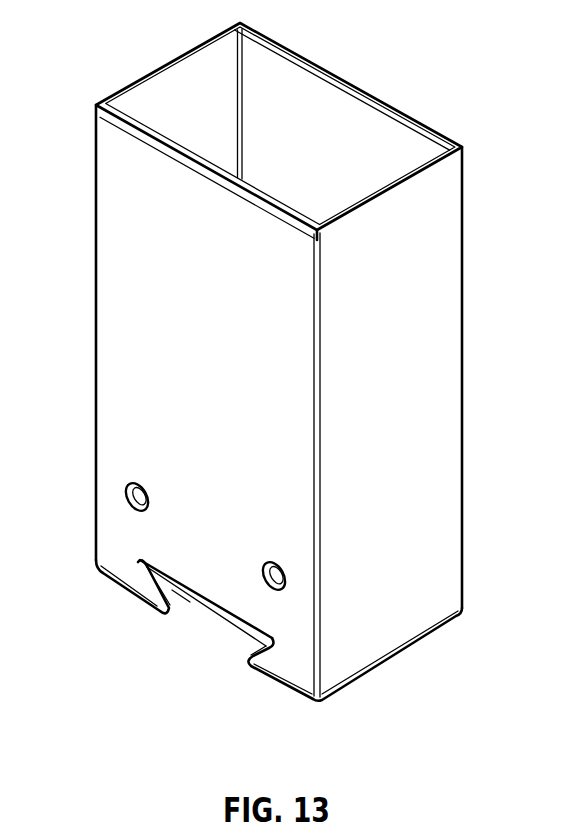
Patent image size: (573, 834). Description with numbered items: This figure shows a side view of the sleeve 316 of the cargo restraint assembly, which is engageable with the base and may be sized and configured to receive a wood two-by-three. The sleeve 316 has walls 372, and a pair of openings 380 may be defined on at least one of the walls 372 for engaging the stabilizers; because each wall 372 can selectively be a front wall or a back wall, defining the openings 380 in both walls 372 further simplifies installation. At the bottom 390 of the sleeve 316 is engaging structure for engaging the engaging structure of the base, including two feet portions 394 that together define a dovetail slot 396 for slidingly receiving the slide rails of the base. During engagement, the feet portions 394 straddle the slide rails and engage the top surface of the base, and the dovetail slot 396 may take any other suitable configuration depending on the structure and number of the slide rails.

The sleeve 316 is at (143, 77).
The wall 372 is at (138, 333).
The openings 380 is at (123, 492).
The bottom 390 is at (413, 648).
The feet portions 394 is at (124, 596).
The dovetail slot 396 is at (220, 610).